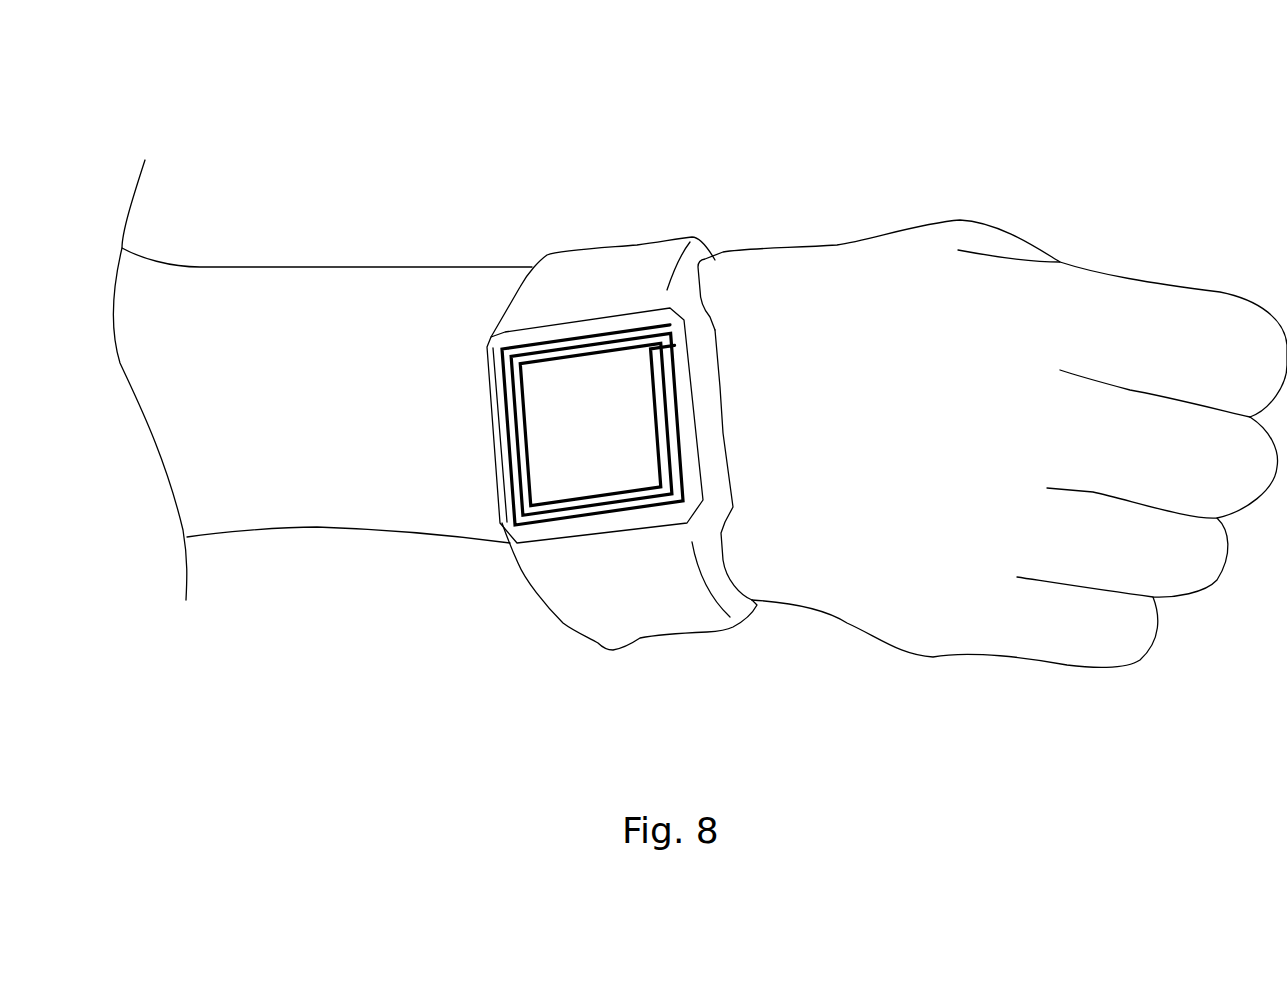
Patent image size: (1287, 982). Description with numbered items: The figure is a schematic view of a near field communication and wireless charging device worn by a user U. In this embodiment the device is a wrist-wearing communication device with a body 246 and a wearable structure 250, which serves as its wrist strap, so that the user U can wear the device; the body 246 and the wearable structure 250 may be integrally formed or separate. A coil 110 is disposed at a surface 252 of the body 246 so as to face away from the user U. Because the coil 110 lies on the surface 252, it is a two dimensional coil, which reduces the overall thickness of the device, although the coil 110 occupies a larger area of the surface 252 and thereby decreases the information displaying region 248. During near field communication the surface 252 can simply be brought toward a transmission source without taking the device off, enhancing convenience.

The coil 110 is at (644, 370).
The body 246 is at (682, 433).
The information displaying region 248 is at (550, 458).
The wearable structure 250 is at (602, 282).
The surface 252 is at (516, 334).
The user U is at (780, 282).